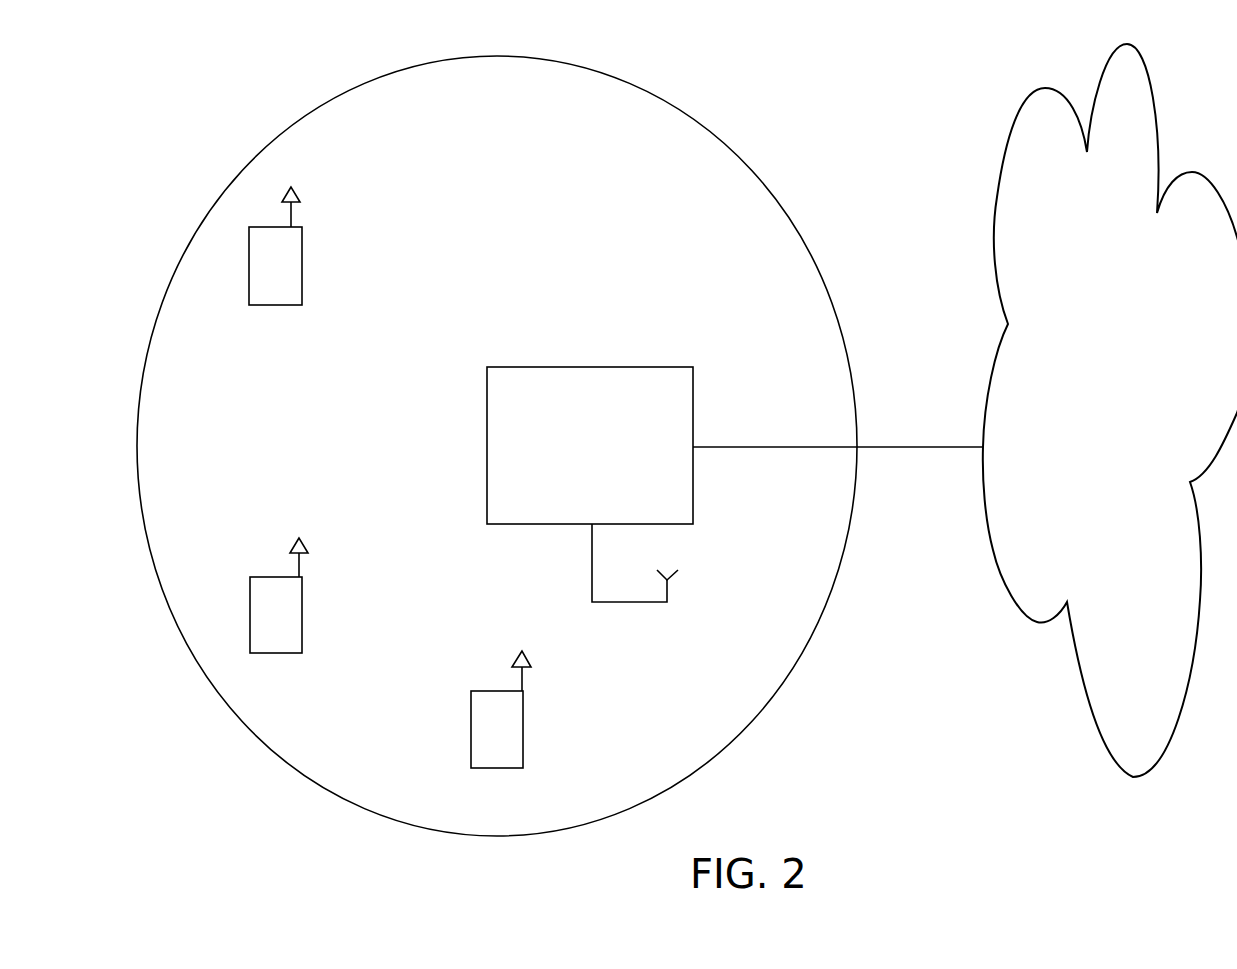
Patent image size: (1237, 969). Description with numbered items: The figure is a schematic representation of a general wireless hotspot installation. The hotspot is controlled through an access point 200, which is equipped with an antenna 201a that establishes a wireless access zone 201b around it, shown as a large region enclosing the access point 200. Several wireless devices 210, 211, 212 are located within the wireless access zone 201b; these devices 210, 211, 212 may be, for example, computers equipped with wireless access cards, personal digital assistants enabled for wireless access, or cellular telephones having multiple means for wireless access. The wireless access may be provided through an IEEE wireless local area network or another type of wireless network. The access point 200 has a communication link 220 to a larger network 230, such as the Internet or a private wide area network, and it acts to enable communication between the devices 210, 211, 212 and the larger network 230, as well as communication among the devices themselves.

The access point 200 is at (676, 520).
The antenna 201a is at (590, 577).
The wireless access zone 201b is at (522, 102).
The device 210 is at (302, 268).
The device 211 is at (302, 637).
The device 212 is at (523, 750).
The communication link 220 is at (923, 447).
The larger network 230 is at (1152, 650).